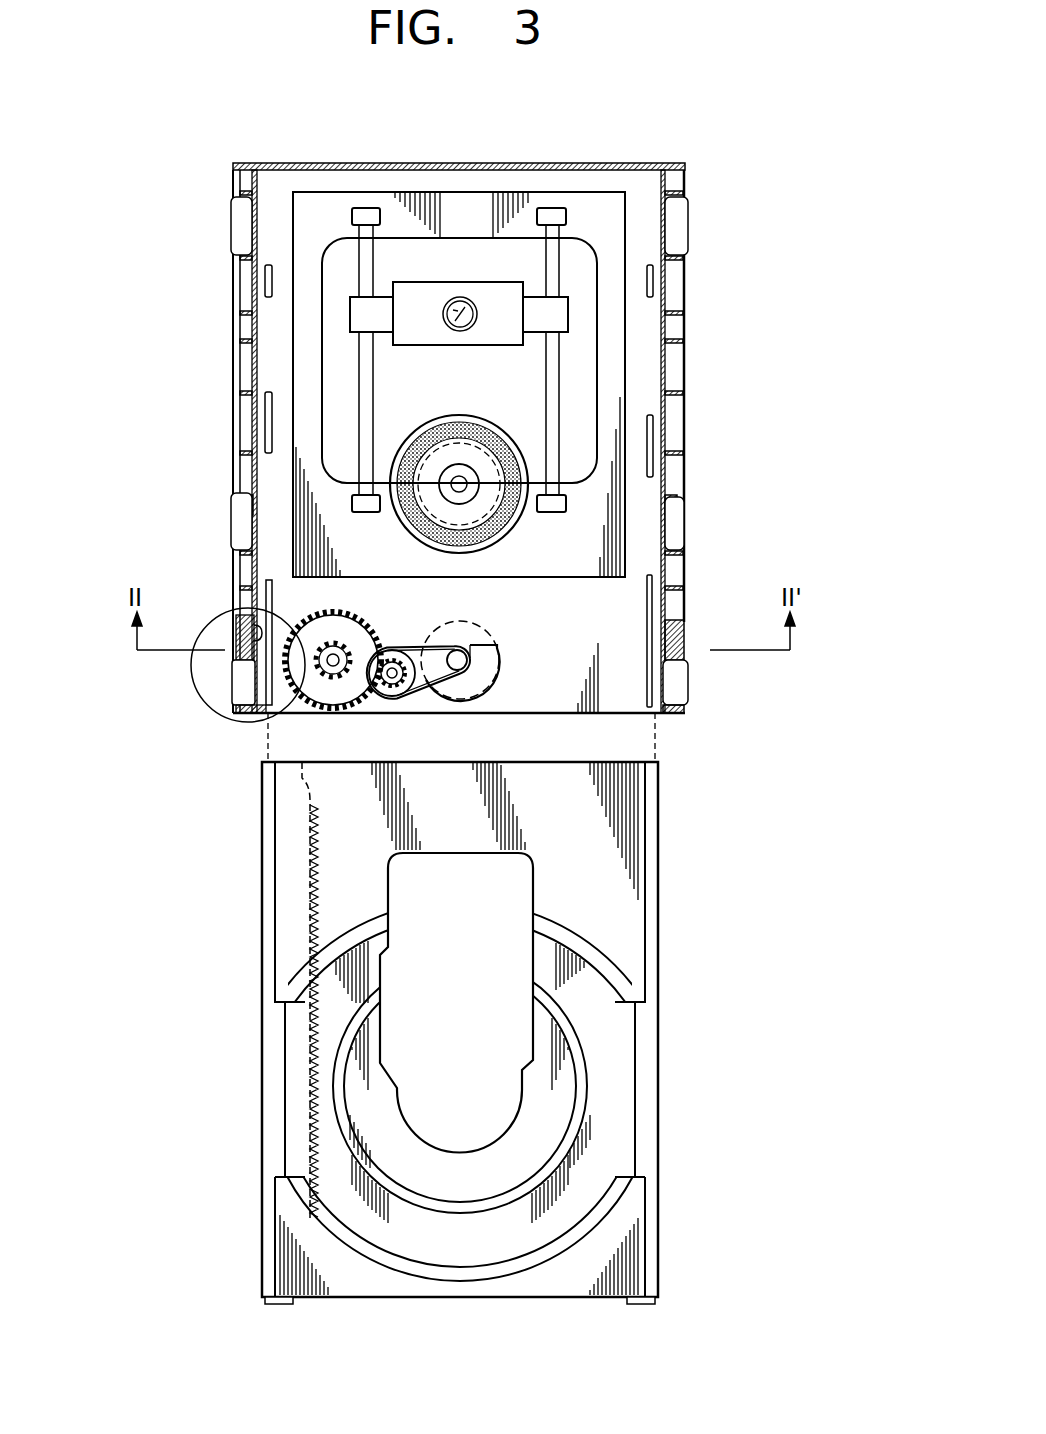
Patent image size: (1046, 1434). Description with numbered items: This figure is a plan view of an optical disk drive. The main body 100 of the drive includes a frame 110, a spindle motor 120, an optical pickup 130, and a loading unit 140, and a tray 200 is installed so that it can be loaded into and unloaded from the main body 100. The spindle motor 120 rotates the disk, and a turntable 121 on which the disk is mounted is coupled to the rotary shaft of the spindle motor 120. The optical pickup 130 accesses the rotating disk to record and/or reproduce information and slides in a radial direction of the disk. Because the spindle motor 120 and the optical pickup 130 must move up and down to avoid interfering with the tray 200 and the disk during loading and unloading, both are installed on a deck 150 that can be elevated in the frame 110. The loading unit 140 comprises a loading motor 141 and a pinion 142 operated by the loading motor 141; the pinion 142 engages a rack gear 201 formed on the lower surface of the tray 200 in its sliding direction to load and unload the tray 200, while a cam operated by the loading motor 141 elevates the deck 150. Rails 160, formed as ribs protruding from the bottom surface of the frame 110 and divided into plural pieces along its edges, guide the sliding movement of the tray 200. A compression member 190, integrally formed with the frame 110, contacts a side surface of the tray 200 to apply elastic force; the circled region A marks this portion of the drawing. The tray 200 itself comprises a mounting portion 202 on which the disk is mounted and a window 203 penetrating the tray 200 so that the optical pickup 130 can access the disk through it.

The main body 100 is at (698, 138).
The frame 110 is at (686, 233).
The spindle motor 120 is at (423, 512).
The turntable 121 is at (508, 532).
The optical pickup 130 is at (462, 296).
The loading unit 140 is at (522, 637).
The loading motor 141 is at (486, 697).
The pinion 142 is at (330, 706).
The deck 150 is at (590, 278).
The rails 160 is at (265, 282).
The compression member 190 is at (256, 638).
The tray 200 is at (680, 980).
The rack gear 201 is at (305, 1073).
The mounting portion 202 is at (612, 1097).
The window 203 is at (480, 1027).
The detail region A is at (200, 700).